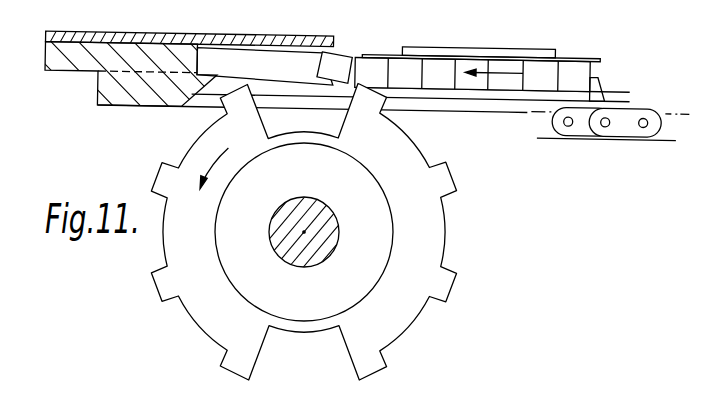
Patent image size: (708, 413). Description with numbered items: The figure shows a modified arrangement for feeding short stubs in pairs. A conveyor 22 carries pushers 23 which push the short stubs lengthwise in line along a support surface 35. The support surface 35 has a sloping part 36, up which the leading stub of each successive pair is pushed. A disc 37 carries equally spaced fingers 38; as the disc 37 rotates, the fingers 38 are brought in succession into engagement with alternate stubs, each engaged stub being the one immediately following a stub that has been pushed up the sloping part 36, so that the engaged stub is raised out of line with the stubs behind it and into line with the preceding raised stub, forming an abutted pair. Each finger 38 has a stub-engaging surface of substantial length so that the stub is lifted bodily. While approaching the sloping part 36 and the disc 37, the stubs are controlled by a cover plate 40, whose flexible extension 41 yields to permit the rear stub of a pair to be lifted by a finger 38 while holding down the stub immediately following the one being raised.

The conveyor 22 is at (632, 125).
The pushers 23 is at (603, 83).
The support surface 35 is at (500, 98).
The sloping part 36 is at (300, 80).
The disc 37 is at (327, 232).
The fingers 38 is at (437, 292).
The cover plate 40 is at (458, 50).
The flexible extension 41 is at (373, 55).